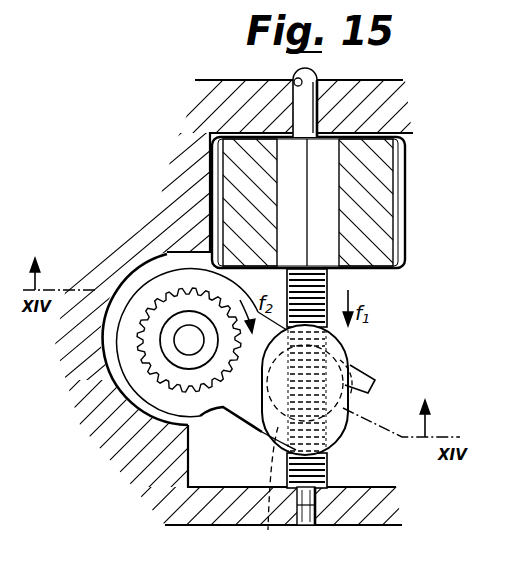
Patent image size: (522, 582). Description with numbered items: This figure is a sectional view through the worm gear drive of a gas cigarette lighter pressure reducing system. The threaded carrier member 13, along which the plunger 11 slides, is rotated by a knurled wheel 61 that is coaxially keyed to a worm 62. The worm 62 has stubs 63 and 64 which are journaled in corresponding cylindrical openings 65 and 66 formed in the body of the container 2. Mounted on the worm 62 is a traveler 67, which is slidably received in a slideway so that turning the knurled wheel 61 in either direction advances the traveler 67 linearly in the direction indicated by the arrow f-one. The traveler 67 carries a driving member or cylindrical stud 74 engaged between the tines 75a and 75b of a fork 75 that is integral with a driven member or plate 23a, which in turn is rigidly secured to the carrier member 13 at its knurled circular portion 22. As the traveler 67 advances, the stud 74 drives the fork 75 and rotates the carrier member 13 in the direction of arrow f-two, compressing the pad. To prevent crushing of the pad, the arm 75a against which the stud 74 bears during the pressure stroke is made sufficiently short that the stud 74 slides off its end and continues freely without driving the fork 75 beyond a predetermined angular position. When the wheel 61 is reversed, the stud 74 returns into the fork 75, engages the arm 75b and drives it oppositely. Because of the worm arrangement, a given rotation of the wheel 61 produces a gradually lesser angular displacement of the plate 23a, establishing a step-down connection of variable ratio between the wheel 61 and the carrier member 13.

The container 2 is at (170, 242).
The plunger 11 is at (125, 415).
The threaded carrier member 13 is at (153, 342).
The knurled circular portion 22 is at (148, 297).
The driven member or plate 23a is at (132, 368).
The knurled wheel 61 is at (387, 210).
The worm 62 is at (327, 292).
The stub 63 is at (322, 80).
The stub 64 is at (303, 520).
The cylindrical opening 65 is at (296, 79).
The cylindrical opening 66 is at (318, 506).
The traveler 67 is at (337, 348).
The cylindrical stud 74 is at (360, 365).
The fork 75 is at (250, 392).
The arm of the fork 75a is at (268, 530).
The arm of the fork 75b is at (377, 383).